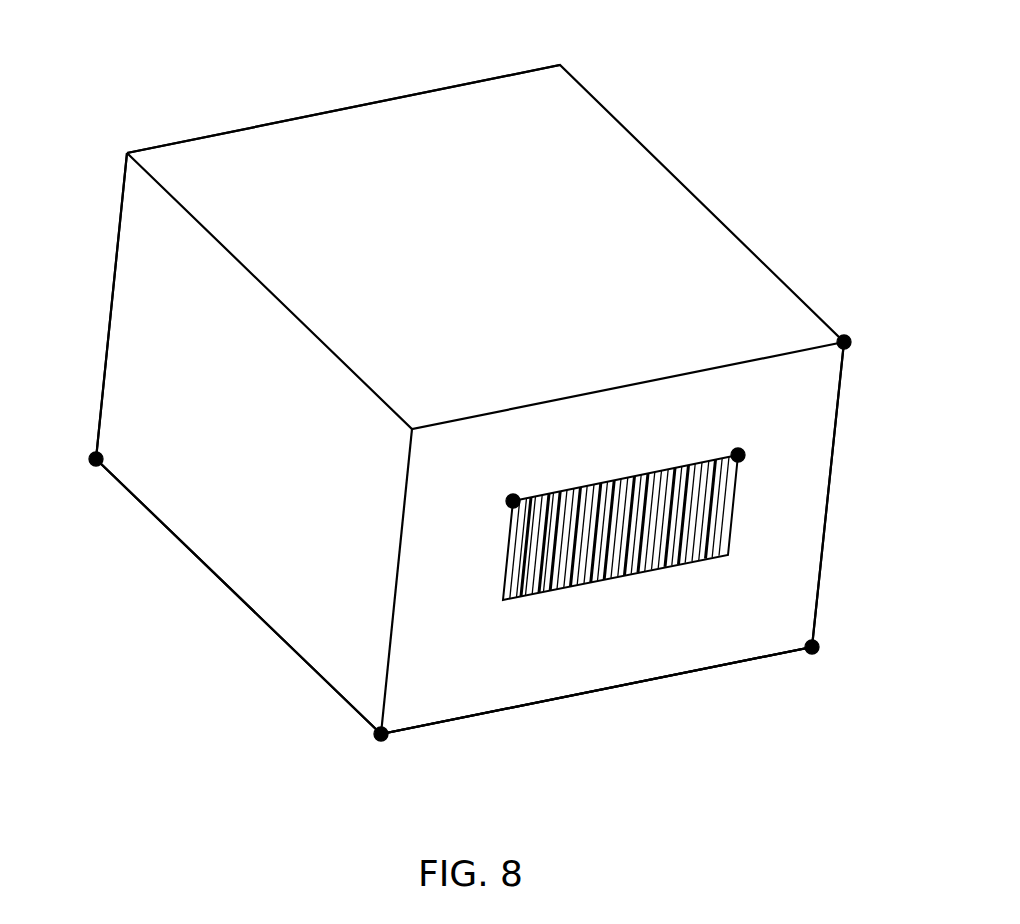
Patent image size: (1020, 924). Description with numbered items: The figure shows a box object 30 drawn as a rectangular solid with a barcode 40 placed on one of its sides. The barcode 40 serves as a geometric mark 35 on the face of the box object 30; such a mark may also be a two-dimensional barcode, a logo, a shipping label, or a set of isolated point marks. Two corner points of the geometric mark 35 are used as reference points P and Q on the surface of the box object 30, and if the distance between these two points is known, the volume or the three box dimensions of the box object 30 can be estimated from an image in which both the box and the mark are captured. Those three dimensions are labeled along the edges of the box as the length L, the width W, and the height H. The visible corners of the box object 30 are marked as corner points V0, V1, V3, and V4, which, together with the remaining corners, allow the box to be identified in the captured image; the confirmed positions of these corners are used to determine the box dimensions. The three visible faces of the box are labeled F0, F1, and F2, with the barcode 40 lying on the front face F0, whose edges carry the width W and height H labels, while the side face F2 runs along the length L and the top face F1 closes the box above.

The box object 30 is at (460, 98).
The geometric mark 35 is at (620, 532).
The barcode 40 is at (617, 577).
The corner point V0 is at (850, 343).
The corner point V1 is at (818, 652).
The corner point V3 is at (375, 738).
The corner point V4 is at (92, 458).
The reference point P is at (508, 497).
The reference point Q is at (733, 450).
The front face F0 is at (648, 660).
The top face F1 is at (272, 137).
The side face F2 is at (123, 317).
The height H is at (834, 494).
The length L is at (238, 596).
The width W is at (596, 690).